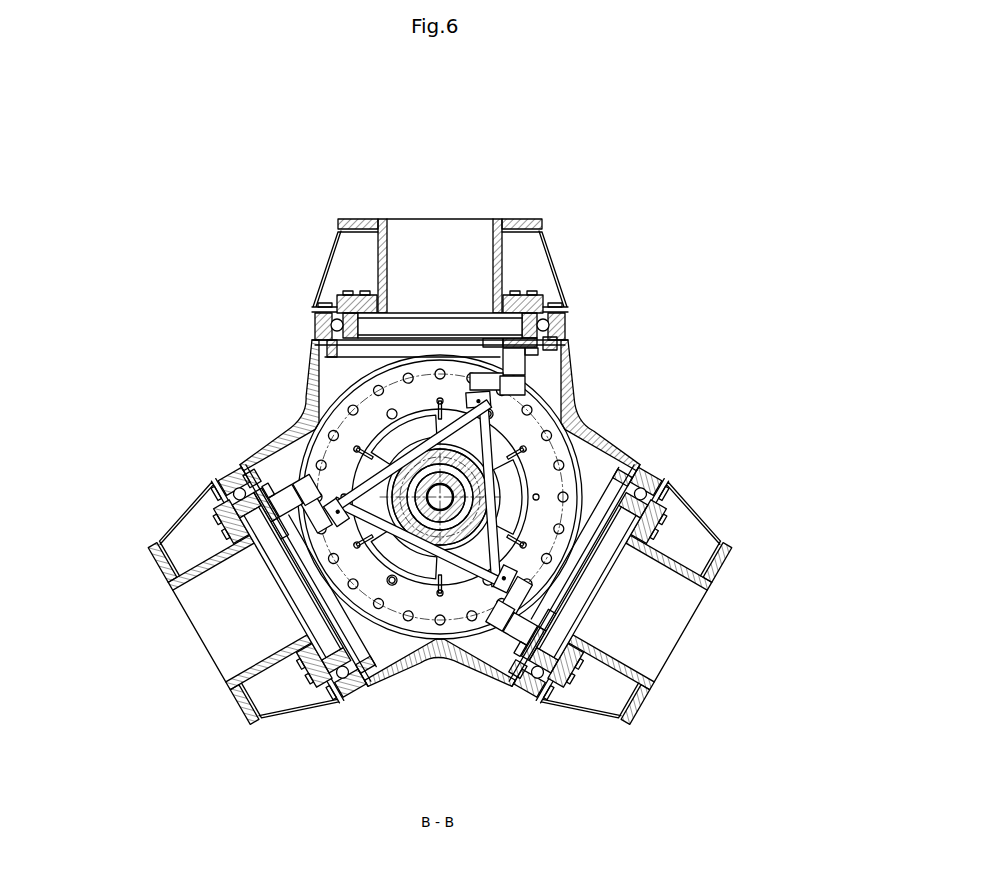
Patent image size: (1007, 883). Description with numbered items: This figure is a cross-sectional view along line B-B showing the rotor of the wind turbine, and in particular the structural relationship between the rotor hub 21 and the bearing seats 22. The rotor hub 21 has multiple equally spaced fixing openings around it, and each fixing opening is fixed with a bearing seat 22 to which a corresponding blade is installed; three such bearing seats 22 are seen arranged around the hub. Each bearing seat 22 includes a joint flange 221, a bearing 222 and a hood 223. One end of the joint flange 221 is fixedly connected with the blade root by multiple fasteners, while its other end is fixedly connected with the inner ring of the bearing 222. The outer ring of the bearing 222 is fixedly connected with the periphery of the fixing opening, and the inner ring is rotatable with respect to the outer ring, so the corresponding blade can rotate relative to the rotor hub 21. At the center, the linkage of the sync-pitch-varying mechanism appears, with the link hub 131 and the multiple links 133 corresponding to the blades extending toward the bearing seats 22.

The rotor hub 21 is at (585, 443).
The bearing seat 22 is at (296, 186).
The link hub 131 is at (331, 441).
The link 133 is at (522, 368).
The joint flange 221 is at (505, 215).
The bearing 222 is at (333, 327).
The hood 223 is at (555, 245).